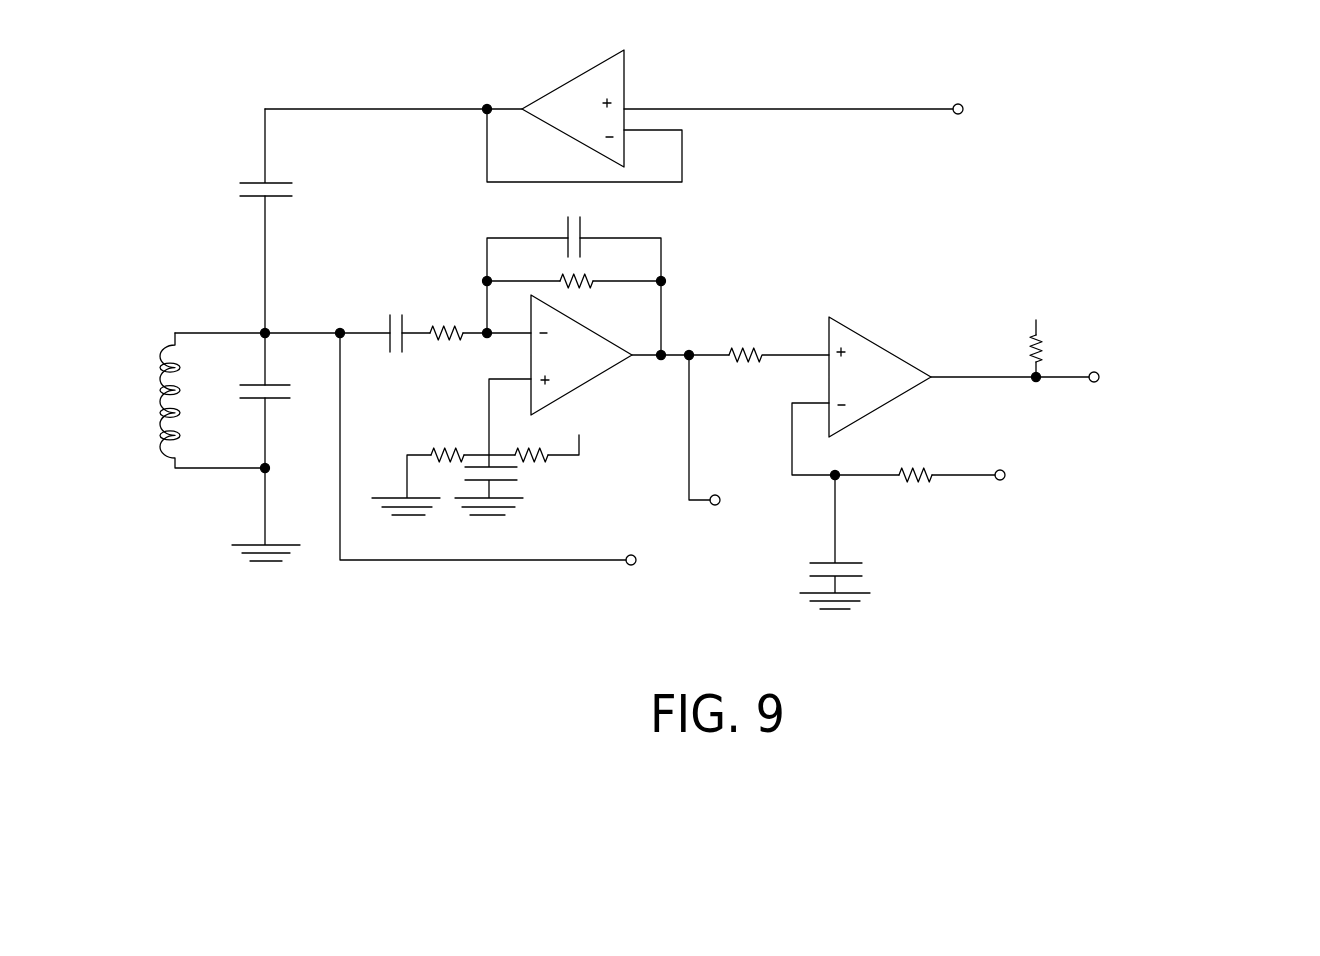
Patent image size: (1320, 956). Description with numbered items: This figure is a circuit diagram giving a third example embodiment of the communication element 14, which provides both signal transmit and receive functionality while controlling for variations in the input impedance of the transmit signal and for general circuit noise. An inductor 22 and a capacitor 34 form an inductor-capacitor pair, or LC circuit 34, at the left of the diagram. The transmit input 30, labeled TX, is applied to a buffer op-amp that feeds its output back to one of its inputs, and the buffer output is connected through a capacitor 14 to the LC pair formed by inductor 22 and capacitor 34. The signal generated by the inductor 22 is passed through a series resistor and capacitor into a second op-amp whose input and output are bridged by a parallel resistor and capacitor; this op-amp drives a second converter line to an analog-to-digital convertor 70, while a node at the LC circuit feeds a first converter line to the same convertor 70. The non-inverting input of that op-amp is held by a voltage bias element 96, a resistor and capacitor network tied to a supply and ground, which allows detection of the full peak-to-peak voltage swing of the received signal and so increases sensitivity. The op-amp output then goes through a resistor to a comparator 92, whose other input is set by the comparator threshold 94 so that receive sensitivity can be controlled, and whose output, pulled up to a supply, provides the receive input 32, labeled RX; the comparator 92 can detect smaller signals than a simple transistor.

The capacitor 14 is at (222, 161).
The inductor 22 is at (178, 414).
The capacitor 34 is at (292, 400).
The transmit input 30 is at (980, 130).
The receive input 32 is at (1120, 395).
The analog-to-digital convertor 70 is at (665, 583).
The comparator 92 is at (918, 390).
The comparator threshold 94 is at (1068, 490).
The voltage bias element 96 is at (489, 422).